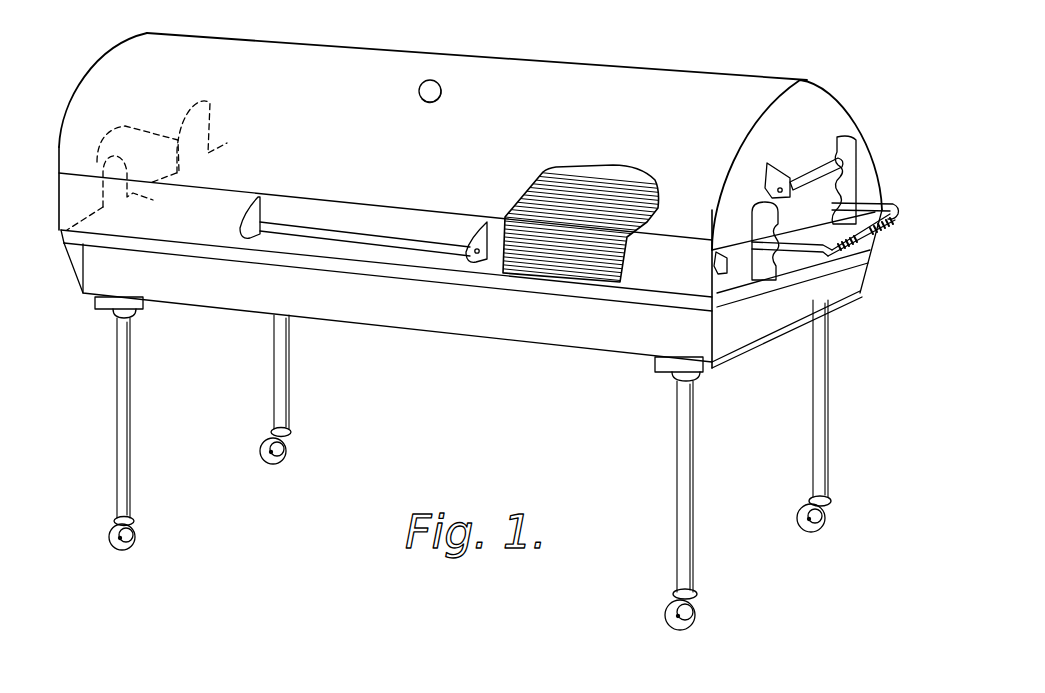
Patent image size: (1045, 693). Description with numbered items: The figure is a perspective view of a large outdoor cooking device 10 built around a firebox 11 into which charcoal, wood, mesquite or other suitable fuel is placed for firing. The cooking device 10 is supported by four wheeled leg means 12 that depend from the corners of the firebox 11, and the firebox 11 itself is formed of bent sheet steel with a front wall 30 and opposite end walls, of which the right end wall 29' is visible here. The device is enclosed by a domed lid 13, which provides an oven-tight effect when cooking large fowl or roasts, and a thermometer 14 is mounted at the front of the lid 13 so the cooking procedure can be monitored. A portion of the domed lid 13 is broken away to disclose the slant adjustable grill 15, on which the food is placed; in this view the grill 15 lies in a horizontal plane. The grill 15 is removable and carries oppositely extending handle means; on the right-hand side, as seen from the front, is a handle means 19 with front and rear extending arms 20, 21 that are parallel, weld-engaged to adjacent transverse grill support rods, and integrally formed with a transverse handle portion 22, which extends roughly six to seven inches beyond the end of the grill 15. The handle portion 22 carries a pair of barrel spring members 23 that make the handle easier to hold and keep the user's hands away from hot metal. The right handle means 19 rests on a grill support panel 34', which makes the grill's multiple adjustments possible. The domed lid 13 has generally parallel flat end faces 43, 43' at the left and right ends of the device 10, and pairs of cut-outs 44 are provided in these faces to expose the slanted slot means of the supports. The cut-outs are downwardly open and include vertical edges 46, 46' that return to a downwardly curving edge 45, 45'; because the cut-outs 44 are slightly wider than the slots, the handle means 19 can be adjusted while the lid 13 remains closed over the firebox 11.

The cooking device 10 is at (512, 54).
The firebox 11 is at (423, 317).
The wheeled leg means 12 is at (277, 395).
The domed lid 13 is at (355, 48).
The thermometer 14 is at (430, 80).
The slant adjustable grill 15 is at (545, 175).
The handle means 19 is at (845, 249).
The front extending arm 20 is at (897, 198).
The rear extending arm 21 is at (801, 250).
The transverse handle portion 22 is at (860, 238).
The barrel spring members 23 is at (897, 223).
The end wall 29' is at (810, 289).
The front wall 30 is at (505, 327).
The grill support panel 34' is at (588, 184).
The flat end face 43 is at (101, 82).
The flat end face 43' is at (805, 148).
The cut-outs 44 is at (110, 108).
The downwardly curving edge 45 is at (138, 144).
The downwardly curving edge 45' is at (737, 200).
The vertical edges 46 is at (167, 158).
The vertical edges 46' is at (849, 219).